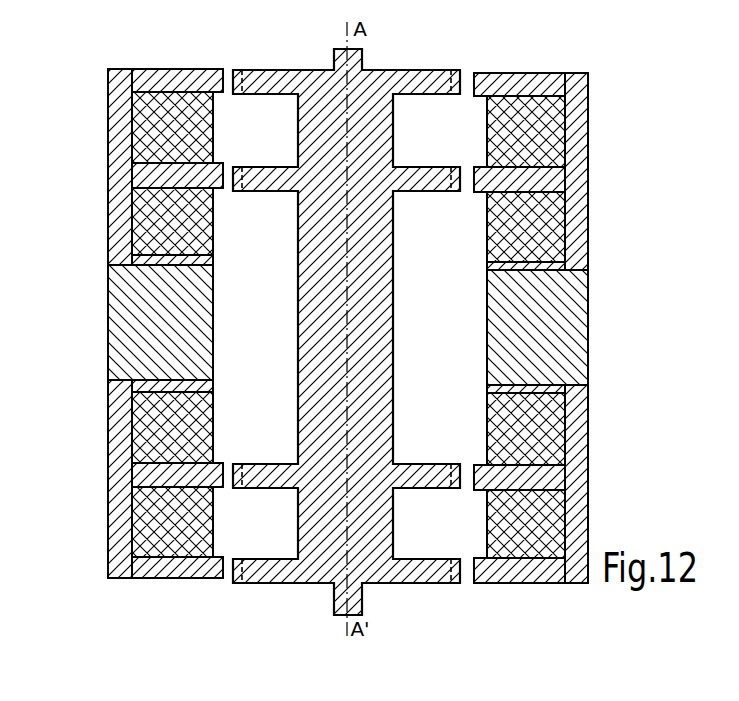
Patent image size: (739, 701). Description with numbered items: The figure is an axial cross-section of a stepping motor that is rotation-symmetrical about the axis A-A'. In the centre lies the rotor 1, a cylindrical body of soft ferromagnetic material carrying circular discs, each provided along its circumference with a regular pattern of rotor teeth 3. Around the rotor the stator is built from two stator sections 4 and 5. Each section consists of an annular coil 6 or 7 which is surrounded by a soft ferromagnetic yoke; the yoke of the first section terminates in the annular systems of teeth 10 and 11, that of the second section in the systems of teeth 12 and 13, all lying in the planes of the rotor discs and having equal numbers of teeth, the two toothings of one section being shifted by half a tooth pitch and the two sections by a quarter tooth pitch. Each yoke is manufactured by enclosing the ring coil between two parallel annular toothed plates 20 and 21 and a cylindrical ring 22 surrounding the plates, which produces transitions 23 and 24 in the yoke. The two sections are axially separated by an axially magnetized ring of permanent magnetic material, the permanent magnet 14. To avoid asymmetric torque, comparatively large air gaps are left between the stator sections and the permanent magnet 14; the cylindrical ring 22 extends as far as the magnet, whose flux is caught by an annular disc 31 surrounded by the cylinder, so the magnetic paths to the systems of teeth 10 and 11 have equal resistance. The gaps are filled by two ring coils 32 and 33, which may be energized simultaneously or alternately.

The rotor 1 is at (370, 341).
The rotor teeth 3 is at (238, 76).
The stator section 4 is at (538, 85).
The stator section 5 is at (527, 540).
The annular coil 6 is at (165, 105).
The annular coil 7 is at (160, 535).
The system of teeth 10 is at (218, 77).
The system of teeth 11 is at (218, 175).
The system of teeth 12 is at (218, 470).
The system of teeth 13 is at (218, 565).
The permanent magnet ring 14 is at (125, 329).
The annular toothed plate 20 is at (150, 80).
The annular toothed plate 21 is at (128, 193).
The cylindrical ring 22 is at (118, 122).
The transition 23 is at (132, 176).
The transition 24 is at (132, 84).
The annular disc 31 is at (128, 263).
The ring coil 32 is at (145, 233).
The ring coil 33 is at (147, 431).